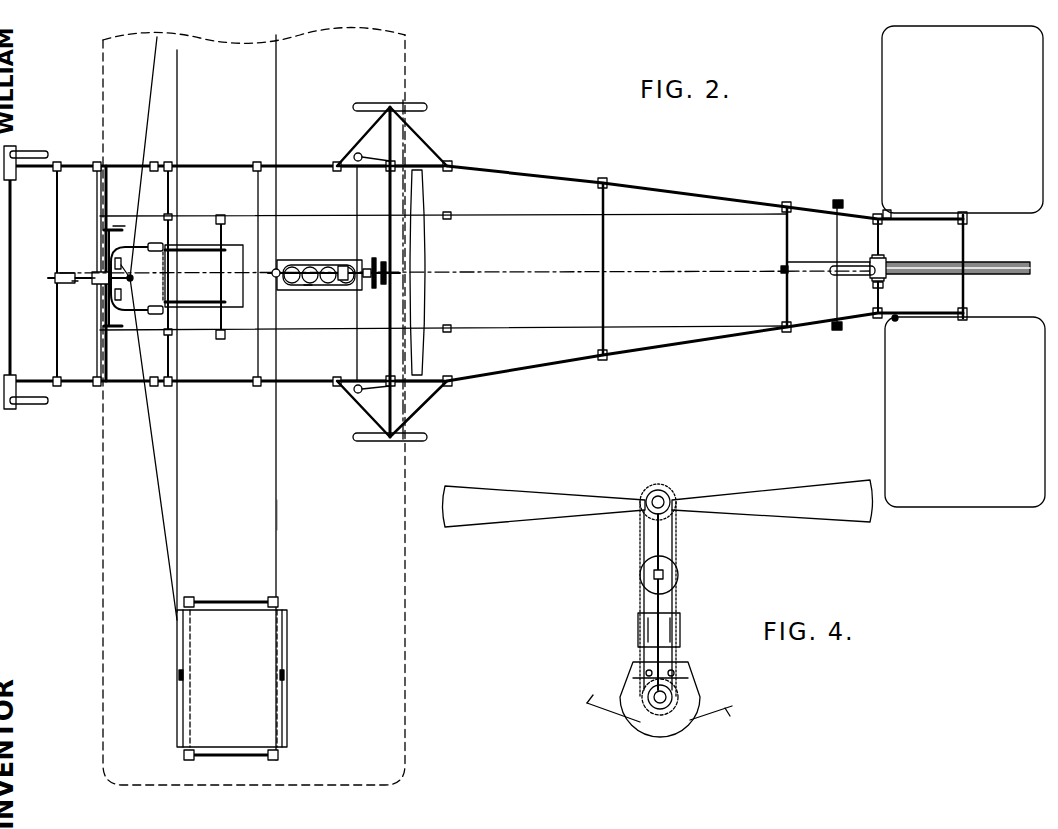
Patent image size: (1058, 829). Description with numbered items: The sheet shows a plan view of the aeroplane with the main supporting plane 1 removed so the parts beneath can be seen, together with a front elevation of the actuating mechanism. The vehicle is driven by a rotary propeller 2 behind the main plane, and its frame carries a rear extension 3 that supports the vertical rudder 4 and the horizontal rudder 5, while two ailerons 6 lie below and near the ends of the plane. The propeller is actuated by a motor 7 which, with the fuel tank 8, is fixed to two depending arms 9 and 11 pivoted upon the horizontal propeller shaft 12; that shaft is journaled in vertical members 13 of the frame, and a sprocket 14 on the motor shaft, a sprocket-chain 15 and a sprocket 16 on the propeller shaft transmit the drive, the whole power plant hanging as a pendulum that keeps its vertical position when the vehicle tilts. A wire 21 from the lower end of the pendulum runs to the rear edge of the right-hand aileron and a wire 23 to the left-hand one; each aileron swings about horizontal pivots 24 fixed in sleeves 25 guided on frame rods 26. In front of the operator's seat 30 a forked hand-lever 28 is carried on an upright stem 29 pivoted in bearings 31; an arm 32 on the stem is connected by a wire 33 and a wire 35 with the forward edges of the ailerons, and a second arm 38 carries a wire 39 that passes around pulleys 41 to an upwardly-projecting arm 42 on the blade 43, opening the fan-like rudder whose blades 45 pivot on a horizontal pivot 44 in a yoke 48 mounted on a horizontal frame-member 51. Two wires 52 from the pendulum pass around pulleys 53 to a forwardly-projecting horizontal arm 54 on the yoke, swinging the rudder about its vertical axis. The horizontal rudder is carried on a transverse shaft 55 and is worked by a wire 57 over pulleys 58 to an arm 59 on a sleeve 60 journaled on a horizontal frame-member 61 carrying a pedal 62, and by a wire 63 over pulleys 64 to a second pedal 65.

In FIG. 2, the main supporting plane 1 is at (403, 535).
In FIG. 2, the rotary propeller 2 is at (430, 312).
In FIG. 4, the rotary propeller 2 is at (658, 503).
In FIG. 2, the rear extension 3 is at (582, 184).
In FIG. 2, the vertical rudder 4 is at (1010, 262).
In FIG. 2, the horizontal rudder 5 is at (963, 266).
In FIG. 2, the aileron 6 is at (232, 678).
In FIG. 2, the motor 7 is at (316, 264).
In FIG. 2, the fuel tank 8 is at (342, 264).
In FIG. 4, the fuel tank 8 is at (678, 575).
In FIG. 2, the depending arm 9 is at (280, 265).
In FIG. 4, the depending arm 9 is at (640, 600).
In FIG. 2, the depending arm 11 is at (374, 258).
In FIG. 2, the propeller shaft 12 is at (319, 290).
In FIG. 4, the propeller shaft 12 is at (659, 494).
In FIG. 2, the vertical members 13 is at (258, 190).
In FIG. 4, the sprocket 14 is at (672, 688).
In FIG. 2, the sprocket-chain 15 is at (378, 290).
In FIG. 4, the sprocket-chain 15 is at (640, 545).
In FIG. 4, the sprocket 16 is at (672, 492).
In FIG. 2, the wire 21 is at (276, 137).
In FIG. 4, the wire 21 is at (609, 700).
In FIG. 2, the wire 23 is at (277, 517).
In FIG. 4, the wire 23 is at (715, 720).
In FIG. 2, the horizontal pivots 24 is at (195, 606).
In FIG. 2, the sleeves 25 is at (271, 597).
In FIG. 2, the rods 26 is at (190, 597).
In FIG. 2, the forked hand-lever 28 is at (122, 262).
In FIG. 2, the upright stem 29 is at (80, 284).
In FIG. 2, the operator's seat 30 is at (203, 276).
In FIG. 2, the bearings 31 is at (95, 275).
In FIG. 2, the arm 32 is at (131, 280).
In FIG. 2, the wire 33 is at (146, 133).
In FIG. 2, the wire 35 is at (158, 490).
In FIG. 2, the arm 38 is at (72, 283).
In FIG. 2, the wire 39 is at (553, 271).
In FIG. 2, the pulleys 41 is at (784, 265).
In FIG. 2, the upwardly-projecting arm 42 is at (874, 256).
In FIG. 2, the blade 43 is at (933, 262).
In FIG. 2, the horizontal pivot 44 is at (873, 283).
In FIG. 2, the blades 45 is at (990, 275).
In FIG. 2, the yoke 48 is at (884, 280).
In FIG. 2, the horizontal frame-member 51 is at (880, 300).
In FIG. 2, the wires 52 is at (357, 197).
In FIG. 2, the pulleys 53 is at (362, 158).
In FIG. 2, the horizontal arm 54 is at (850, 275).
In FIG. 2, the shaft 55 is at (968, 240).
In FIG. 2, the wire 57 is at (695, 215).
In FIG. 2, the pulleys 58 is at (884, 212).
In FIG. 2, the forwardly-projecting arm 59 is at (115, 229).
In FIG. 2, the sleeve 60 is at (104, 237).
In FIG. 2, the horizontal frame-member 61 is at (106, 200).
In FIG. 2, the pedal 62 is at (128, 272).
In FIG. 2, the wire 63 is at (697, 326).
In FIG. 2, the pulleys 64 is at (897, 322).
In FIG. 2, the pedal 65 is at (122, 296).